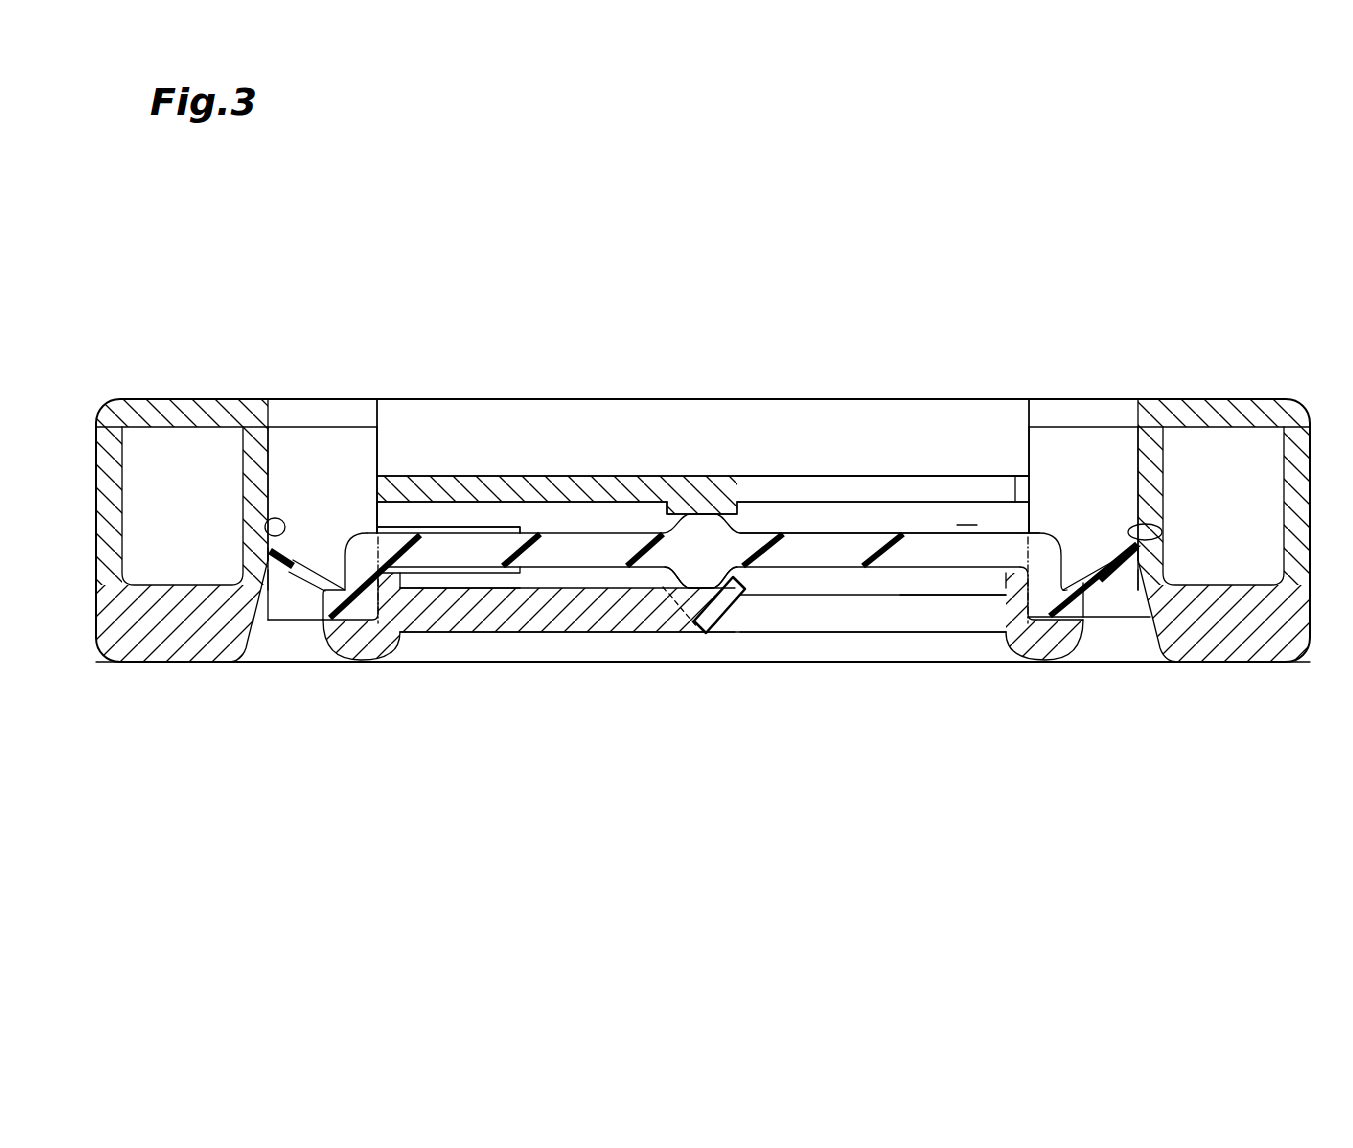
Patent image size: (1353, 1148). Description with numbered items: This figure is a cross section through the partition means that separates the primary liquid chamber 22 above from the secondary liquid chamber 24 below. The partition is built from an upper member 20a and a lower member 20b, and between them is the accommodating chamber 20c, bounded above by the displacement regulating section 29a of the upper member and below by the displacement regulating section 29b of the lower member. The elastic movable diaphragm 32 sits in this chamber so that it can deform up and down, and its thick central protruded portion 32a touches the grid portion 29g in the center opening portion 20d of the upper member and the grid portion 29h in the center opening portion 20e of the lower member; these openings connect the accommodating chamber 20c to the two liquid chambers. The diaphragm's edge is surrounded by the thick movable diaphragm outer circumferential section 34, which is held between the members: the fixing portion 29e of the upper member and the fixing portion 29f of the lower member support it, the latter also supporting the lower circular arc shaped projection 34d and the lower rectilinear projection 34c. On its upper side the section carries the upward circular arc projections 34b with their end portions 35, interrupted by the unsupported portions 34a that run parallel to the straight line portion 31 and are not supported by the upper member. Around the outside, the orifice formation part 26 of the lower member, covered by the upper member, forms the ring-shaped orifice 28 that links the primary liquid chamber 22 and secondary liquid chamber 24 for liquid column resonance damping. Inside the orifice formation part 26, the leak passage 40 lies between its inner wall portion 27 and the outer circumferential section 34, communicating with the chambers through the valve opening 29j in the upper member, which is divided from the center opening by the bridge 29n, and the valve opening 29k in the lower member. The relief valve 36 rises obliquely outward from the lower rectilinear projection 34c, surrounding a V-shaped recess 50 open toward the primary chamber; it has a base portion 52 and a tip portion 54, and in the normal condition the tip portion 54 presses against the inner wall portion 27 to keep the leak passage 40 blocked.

The upper member 20a is at (200, 376).
The lower member 20b is at (157, 676).
The accommodating chamber 20c is at (630, 513).
The center opening portion 20d is at (832, 487).
The center opening portion 20e is at (835, 620).
The primary liquid chamber 22 is at (863, 348).
The secondary liquid chamber 24 is at (890, 785).
The orifice formation part 26 is at (187, 647).
The inner wall portion 27 is at (266, 530).
The orifice 28 is at (178, 481).
The displacement regulating section 29a is at (597, 465).
The displacement regulating section 29b is at (502, 635).
The fixing portion 29e is at (440, 513).
The fixing portion 29f is at (433, 588).
The grid portion 29g is at (713, 476).
The grid portion 29h is at (703, 612).
The valve opening 29j is at (343, 410).
The valve opening 29k is at (311, 650).
The bridge 29n is at (1012, 477).
The straight line portion 31 is at (378, 528).
The elastic movable diaphragm 32 is at (800, 566).
The protruded portion 32a is at (760, 590).
The movable diaphragm outer circumferential section 34 is at (358, 622).
The unsupported portion 34a is at (366, 533).
The upward circular arc projection 34b is at (522, 527).
The lower rectilinear projection 34c is at (362, 611).
The lower circular arc shaped projection 34d is at (535, 580).
The end portion 35 is at (375, 515).
The relief valve 36 is at (268, 582).
The leak passage 40 is at (288, 612).
The recess 50 is at (295, 552).
The base portion 52 is at (344, 589).
The tip portion 54 is at (270, 553).